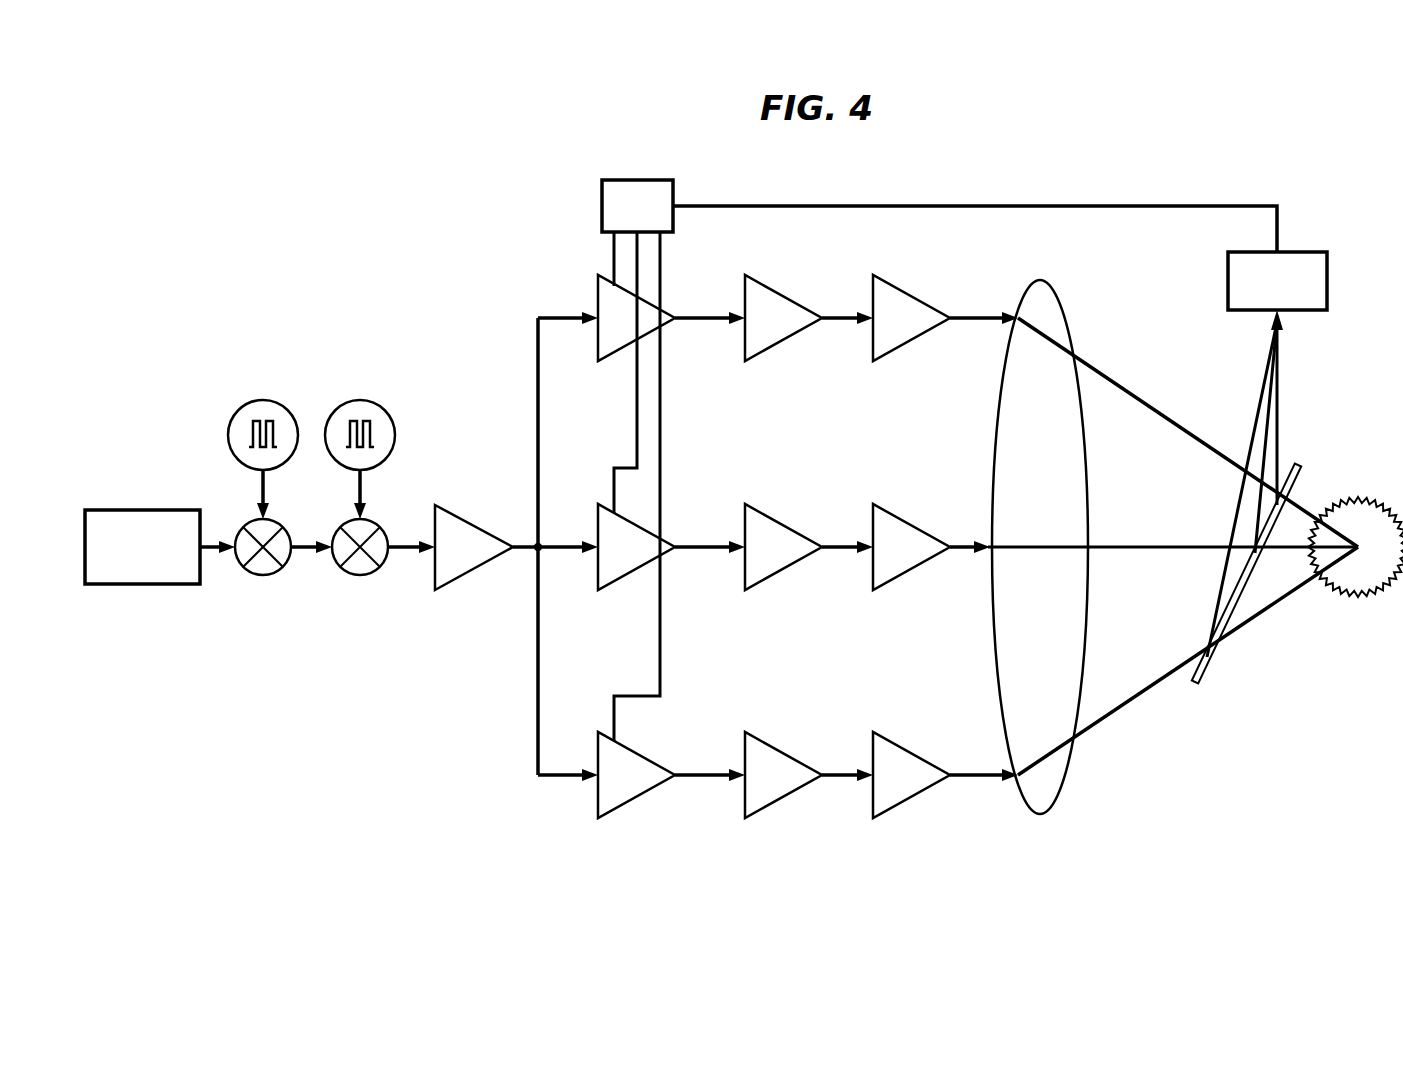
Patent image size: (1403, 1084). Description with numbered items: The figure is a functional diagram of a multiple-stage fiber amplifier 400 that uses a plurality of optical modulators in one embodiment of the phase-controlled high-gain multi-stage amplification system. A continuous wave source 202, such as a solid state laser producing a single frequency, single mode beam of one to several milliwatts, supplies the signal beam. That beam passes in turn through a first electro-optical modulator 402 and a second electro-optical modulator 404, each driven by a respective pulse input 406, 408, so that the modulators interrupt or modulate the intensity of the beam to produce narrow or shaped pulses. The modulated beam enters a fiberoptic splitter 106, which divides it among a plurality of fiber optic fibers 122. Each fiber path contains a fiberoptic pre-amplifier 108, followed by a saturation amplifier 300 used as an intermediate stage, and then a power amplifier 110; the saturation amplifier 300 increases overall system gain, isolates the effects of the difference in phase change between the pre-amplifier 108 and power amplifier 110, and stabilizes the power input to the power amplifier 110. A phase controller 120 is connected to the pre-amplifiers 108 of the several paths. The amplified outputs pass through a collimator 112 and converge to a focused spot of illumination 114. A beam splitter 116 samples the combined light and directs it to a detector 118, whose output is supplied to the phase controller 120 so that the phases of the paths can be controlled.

The radar system 400 is at (351, 254).
The continuous wave source 202 is at (166, 585).
The first electro-optical modulator 402 is at (263, 576).
The second electro-optical modulator 404 is at (360, 576).
The first pulse generator 406 is at (228, 432).
The second pulse generator 408 is at (395, 432).
The fiberoptic splitter 106 is at (458, 514).
The fiber optic fibers 122 is at (566, 546).
The phase controller 120 is at (628, 180).
The fiberoptic pre-amplifier 108 is at (638, 815).
The saturation amplifier 300 is at (783, 815).
The power amplifier 110 is at (911, 815).
The collimator 112 is at (1063, 775).
The detector 118 is at (1327, 262).
The beam splitter 116 is at (1301, 480).
The focused spot of illumination 114 is at (1368, 570).